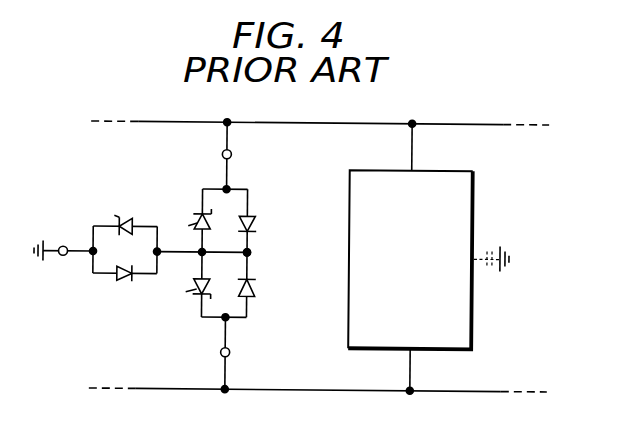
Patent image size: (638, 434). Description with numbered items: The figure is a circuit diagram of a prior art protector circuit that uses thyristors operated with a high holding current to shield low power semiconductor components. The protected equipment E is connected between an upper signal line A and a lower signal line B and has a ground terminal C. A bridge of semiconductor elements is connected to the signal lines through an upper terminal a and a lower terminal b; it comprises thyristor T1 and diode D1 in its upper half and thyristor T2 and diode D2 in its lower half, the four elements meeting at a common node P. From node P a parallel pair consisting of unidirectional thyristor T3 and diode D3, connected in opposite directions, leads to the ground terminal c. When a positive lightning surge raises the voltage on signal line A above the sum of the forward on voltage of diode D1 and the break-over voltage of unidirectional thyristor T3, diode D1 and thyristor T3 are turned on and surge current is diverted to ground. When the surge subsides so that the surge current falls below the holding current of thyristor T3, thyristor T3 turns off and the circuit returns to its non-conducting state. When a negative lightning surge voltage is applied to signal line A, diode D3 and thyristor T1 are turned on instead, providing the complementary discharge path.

The signal line A is at (465, 123).
The signal line B is at (467, 390).
The ground terminal C is at (490, 250).
The protected equipment E is at (410, 259).
The common node P is at (252, 253).
The upper terminal a is at (231, 155).
The lower terminal b is at (231, 353).
The ground terminal c is at (63, 258).
The thyristor T1 is at (188, 227).
The thyristor T2 is at (186, 293).
The unidirectional thyristor T3 is at (121, 219).
The diode D1 is at (252, 217).
The diode D2 is at (255, 290).
The diode D3 is at (122, 283).